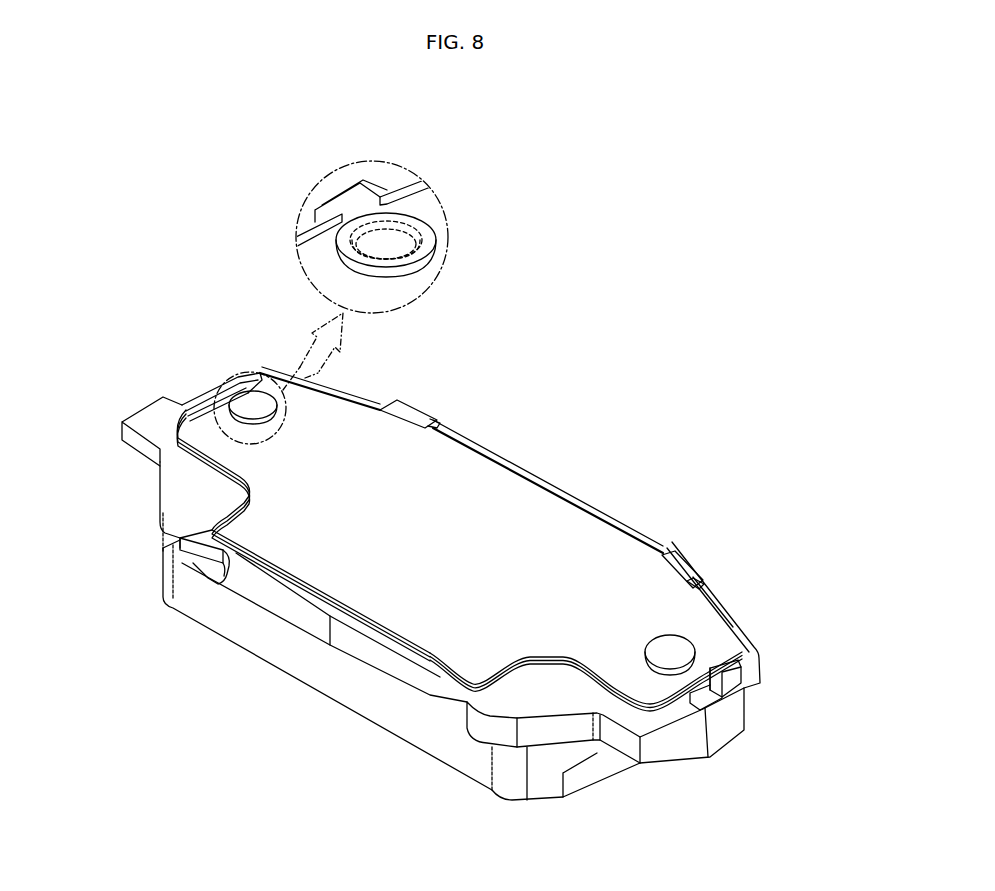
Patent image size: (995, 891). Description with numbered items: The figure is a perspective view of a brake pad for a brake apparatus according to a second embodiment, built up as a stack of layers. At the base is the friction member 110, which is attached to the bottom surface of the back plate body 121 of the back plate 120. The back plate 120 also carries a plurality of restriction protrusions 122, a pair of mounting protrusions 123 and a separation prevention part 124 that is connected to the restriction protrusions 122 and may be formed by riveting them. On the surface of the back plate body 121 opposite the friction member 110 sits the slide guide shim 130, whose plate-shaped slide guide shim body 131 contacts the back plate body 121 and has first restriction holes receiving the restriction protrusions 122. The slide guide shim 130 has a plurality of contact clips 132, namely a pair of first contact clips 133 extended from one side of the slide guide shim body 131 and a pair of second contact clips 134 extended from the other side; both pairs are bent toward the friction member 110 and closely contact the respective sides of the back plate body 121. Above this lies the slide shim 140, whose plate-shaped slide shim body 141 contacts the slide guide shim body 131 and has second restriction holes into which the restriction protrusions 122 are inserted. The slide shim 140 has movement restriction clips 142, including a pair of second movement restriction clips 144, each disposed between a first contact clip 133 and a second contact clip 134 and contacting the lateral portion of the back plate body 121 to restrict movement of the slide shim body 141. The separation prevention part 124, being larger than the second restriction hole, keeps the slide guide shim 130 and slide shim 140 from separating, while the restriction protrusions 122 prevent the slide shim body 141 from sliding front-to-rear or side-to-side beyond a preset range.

The friction member 110 is at (278, 648).
The back plate 120 is at (221, 332).
The back plate body 121 is at (175, 498).
The restriction protrusions 122 is at (402, 252).
The mounting protrusions 123 is at (150, 417).
The separation prevention part 124 is at (253, 408).
The slide guide shim 130 is at (454, 596).
The slide guide shim body 131 is at (557, 657).
The contact clips 132 is at (309, 484).
The first contact clips 133 is at (197, 556).
The second contact clips 134 is at (420, 418).
The slide shim 140 is at (477, 521).
The slide shim body 141 is at (598, 553).
The movement restriction clips 142 is at (768, 702).
The second movement restriction clips 144 is at (737, 680).